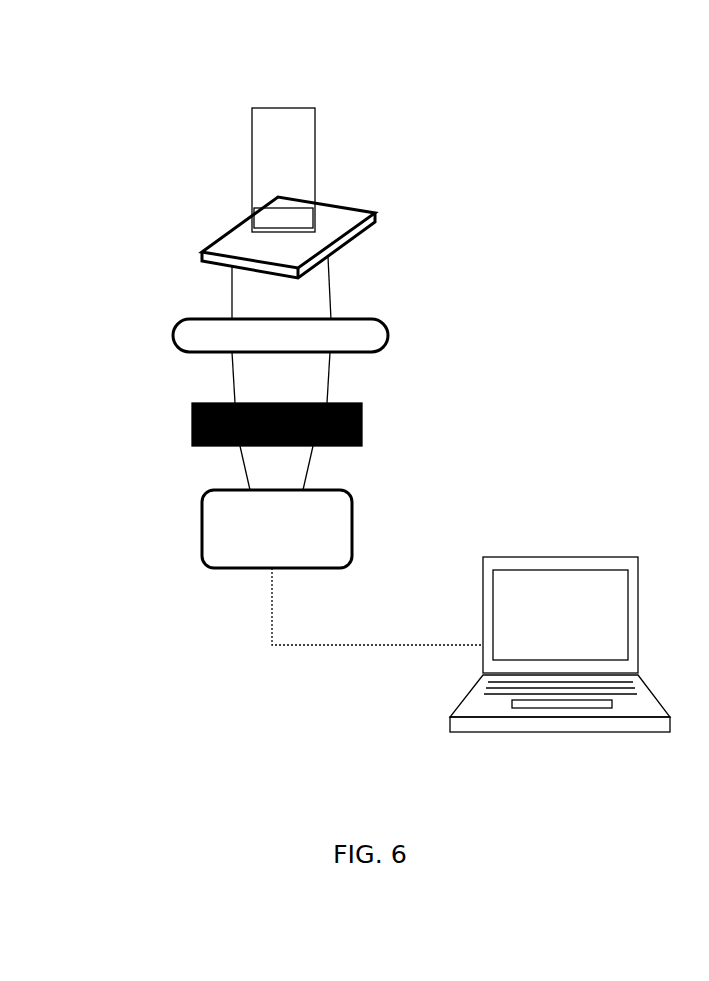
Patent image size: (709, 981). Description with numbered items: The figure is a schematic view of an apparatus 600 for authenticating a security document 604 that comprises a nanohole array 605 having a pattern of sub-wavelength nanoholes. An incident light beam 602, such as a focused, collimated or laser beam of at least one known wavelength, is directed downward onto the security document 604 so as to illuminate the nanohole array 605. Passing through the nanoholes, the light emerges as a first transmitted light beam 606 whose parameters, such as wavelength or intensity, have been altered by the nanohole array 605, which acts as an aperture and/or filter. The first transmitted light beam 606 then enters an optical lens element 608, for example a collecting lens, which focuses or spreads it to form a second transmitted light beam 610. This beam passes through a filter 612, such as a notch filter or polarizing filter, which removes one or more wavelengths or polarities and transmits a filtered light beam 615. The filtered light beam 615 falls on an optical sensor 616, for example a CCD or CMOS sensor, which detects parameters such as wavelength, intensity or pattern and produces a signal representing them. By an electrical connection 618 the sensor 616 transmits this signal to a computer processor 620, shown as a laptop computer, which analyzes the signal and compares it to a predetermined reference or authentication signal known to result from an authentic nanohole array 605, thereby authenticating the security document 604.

The apparatus 600 is at (370, 93).
The incident light beam 602 is at (262, 135).
The security document 604 is at (378, 212).
The nanohole array 605 is at (233, 230).
The first transmitted light beam 606 is at (230, 301).
The optical lens element 608 is at (357, 333).
The second transmitted light beam 610 is at (232, 383).
The filter 612 is at (363, 408).
The filtered light beam 615 is at (243, 482).
The optical sensor 616 is at (327, 533).
The electrical connection 618 is at (265, 603).
The computer processor 620 is at (538, 556).